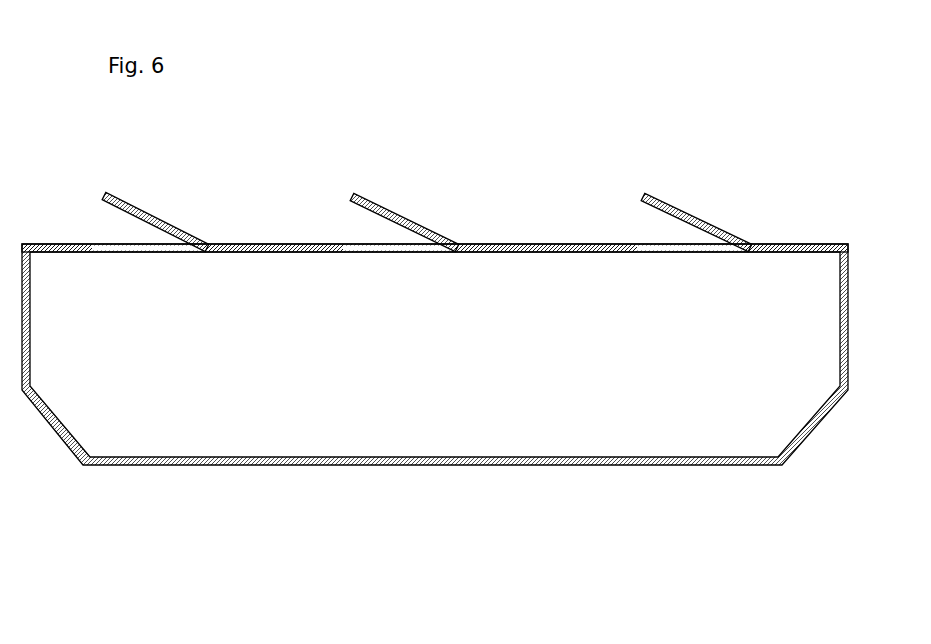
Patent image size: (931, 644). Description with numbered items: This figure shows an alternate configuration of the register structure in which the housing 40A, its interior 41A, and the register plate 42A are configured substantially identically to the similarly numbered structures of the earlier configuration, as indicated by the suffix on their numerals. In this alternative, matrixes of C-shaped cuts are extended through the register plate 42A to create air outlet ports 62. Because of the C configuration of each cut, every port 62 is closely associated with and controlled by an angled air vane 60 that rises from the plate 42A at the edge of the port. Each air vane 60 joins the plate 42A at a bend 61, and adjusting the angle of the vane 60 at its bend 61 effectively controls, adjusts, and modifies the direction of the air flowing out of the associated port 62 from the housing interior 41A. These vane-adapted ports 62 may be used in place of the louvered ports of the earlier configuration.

The register housing 40A is at (617, 464).
The housing interior 41A is at (444, 405).
The register plate 42A is at (262, 248).
The angled air vane 60 is at (138, 206).
The bend 61 is at (461, 245).
The air outlet port 62 is at (117, 233).